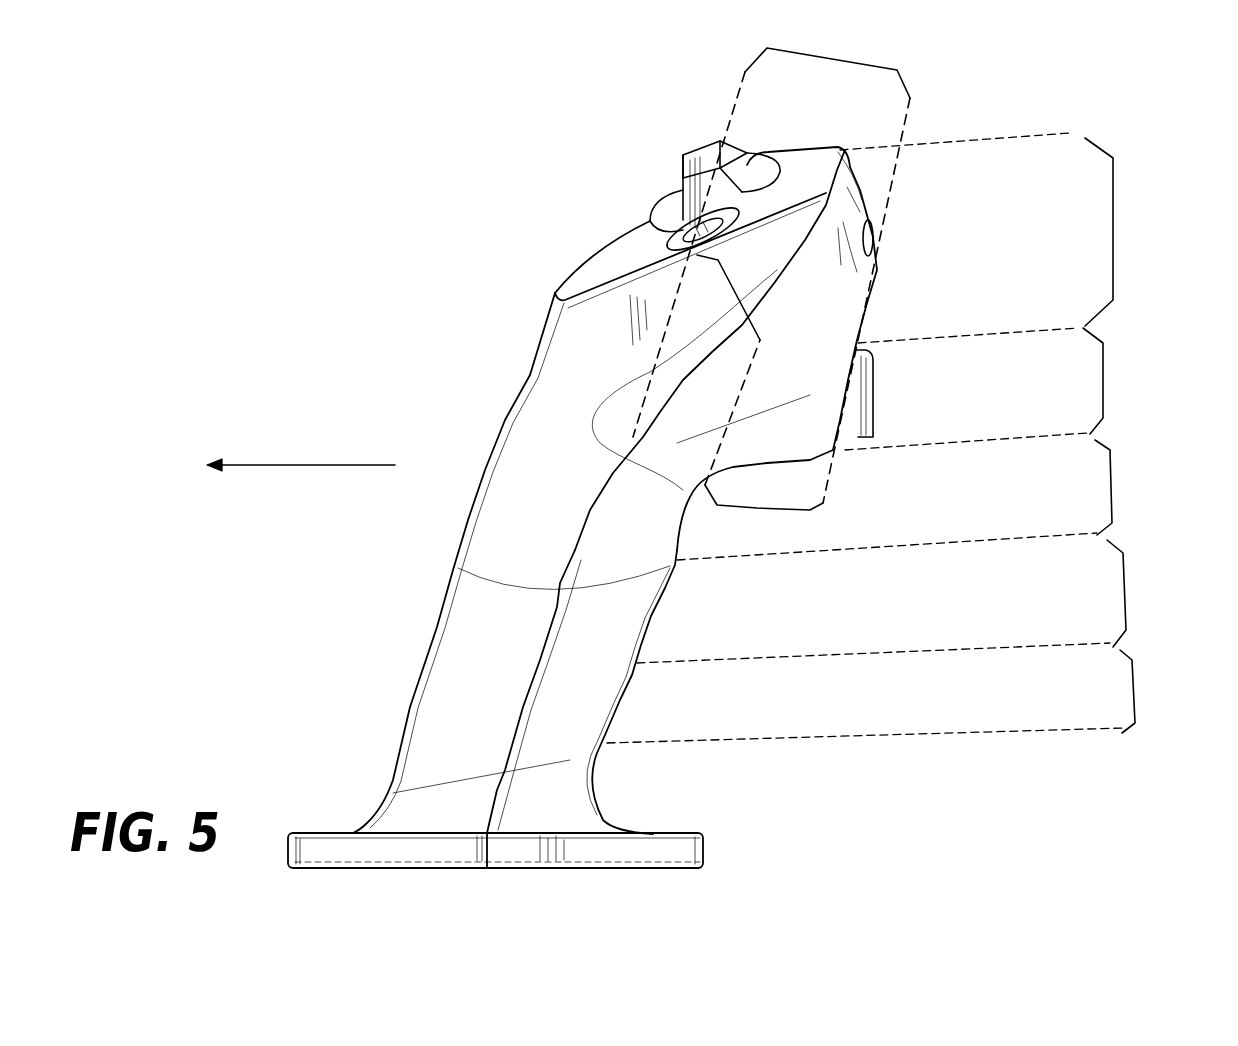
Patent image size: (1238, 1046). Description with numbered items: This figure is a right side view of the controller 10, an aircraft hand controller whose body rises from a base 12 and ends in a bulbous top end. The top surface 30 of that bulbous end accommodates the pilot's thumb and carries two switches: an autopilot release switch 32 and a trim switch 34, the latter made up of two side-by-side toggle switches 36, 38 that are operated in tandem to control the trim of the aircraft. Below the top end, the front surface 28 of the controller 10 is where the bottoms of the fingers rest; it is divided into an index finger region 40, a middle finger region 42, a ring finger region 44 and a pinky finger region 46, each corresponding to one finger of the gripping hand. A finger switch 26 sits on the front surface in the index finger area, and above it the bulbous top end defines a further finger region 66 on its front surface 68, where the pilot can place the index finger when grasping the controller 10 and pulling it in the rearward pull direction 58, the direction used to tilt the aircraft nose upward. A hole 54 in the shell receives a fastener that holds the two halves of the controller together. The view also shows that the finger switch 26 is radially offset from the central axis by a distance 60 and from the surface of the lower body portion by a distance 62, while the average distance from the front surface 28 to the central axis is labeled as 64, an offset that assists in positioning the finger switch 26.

The controller 10 is at (1005, 186).
The base 12 is at (657, 832).
The finger switch 26 is at (850, 397).
The front surface 28 is at (645, 627).
The top surface 30 is at (617, 270).
The autopilot release switch 32 is at (645, 217).
The trim switch 34 is at (667, 175).
The toggle switch 36 is at (703, 147).
The toggle switch 38 is at (707, 195).
The index finger region 40 is at (1103, 381).
The middle finger region 42 is at (1111, 487).
The ring finger region 44 is at (1124, 592).
The pinky finger region 46 is at (1133, 692).
The hole 54 is at (880, 243).
The rearward pull direction 58 is at (342, 465).
The distance 60 is at (817, 57).
The distance 62 is at (757, 507).
The average distance 64 is at (745, 290).
The finger region 66 is at (1113, 226).
The front surface 68 is at (850, 287).